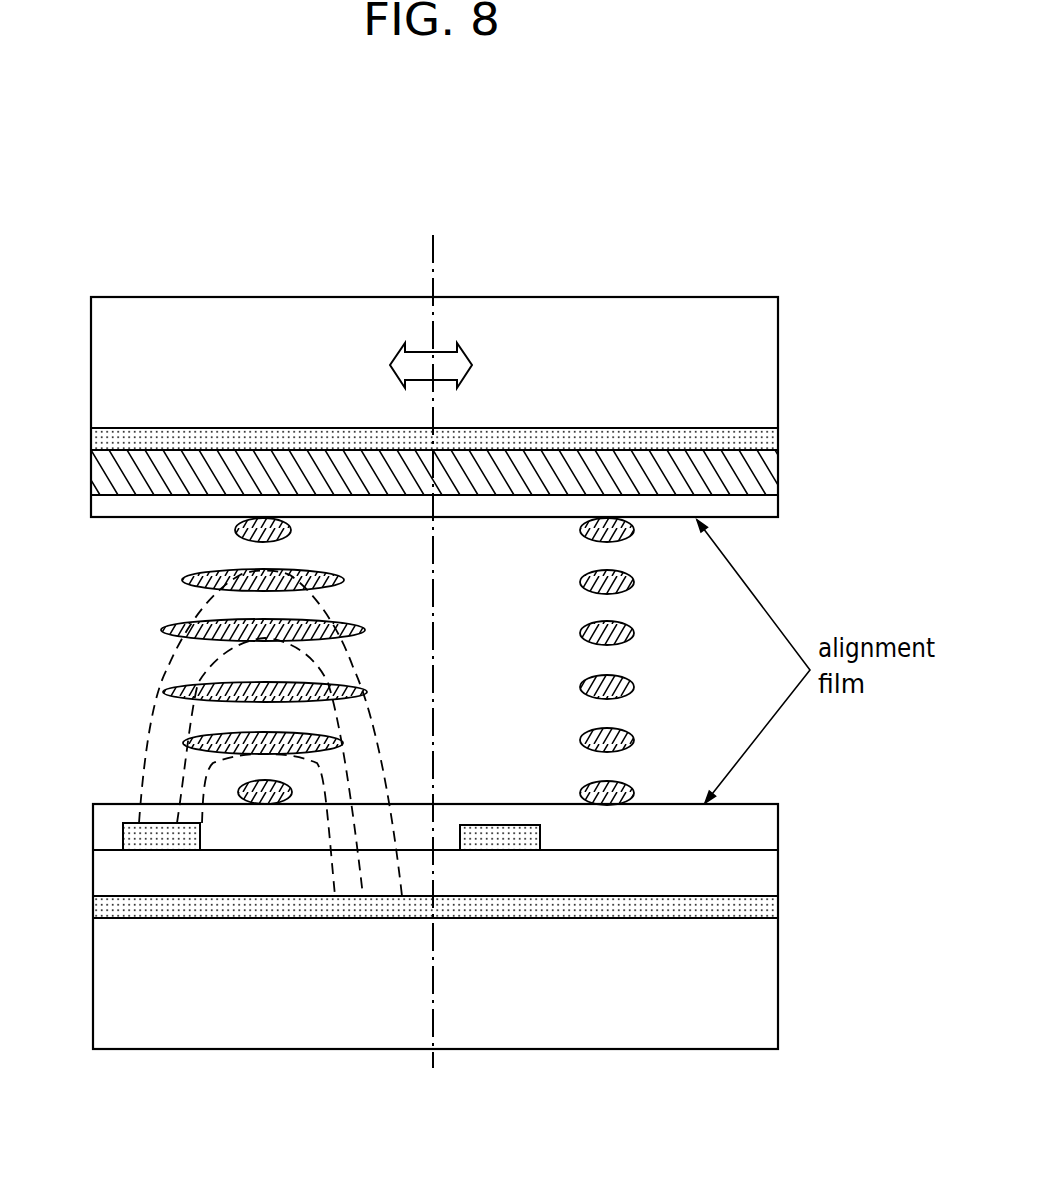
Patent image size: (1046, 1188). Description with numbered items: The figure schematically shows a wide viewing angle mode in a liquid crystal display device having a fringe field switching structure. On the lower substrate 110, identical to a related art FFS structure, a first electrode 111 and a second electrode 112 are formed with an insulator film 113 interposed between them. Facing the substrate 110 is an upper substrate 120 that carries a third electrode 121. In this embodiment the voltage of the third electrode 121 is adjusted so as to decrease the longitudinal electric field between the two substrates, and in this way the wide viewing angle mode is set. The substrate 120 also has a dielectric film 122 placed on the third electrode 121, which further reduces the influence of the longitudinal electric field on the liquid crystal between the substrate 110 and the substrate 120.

The substrate 110 is at (780, 981).
The first electrode 111 is at (480, 850).
The second electrode 112 is at (780, 906).
The insulator film 113 is at (780, 866).
The substrate 120 is at (236, 297).
The third electrode 121 is at (505, 428).
The dielectric film 122 is at (705, 450).